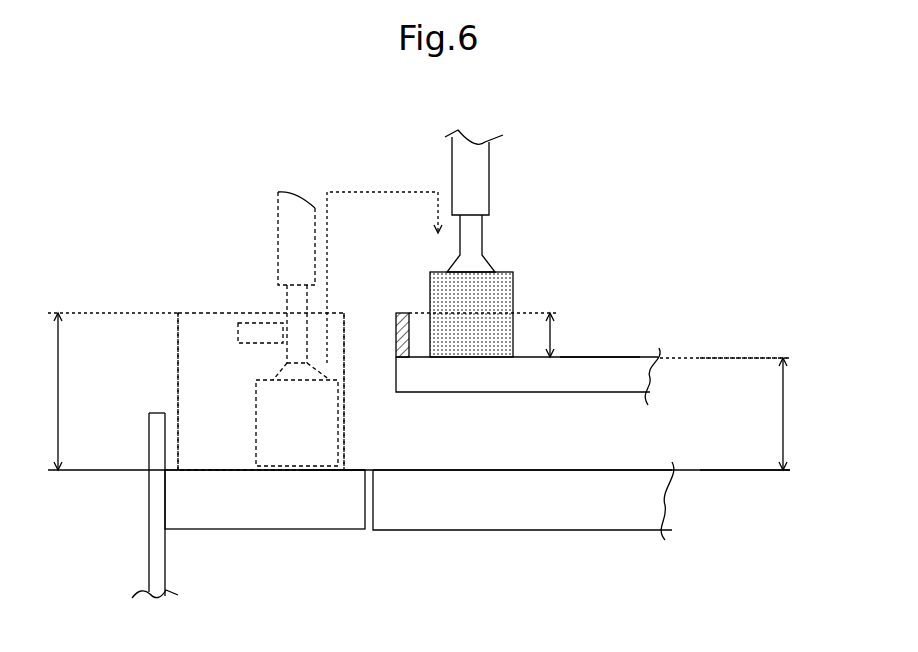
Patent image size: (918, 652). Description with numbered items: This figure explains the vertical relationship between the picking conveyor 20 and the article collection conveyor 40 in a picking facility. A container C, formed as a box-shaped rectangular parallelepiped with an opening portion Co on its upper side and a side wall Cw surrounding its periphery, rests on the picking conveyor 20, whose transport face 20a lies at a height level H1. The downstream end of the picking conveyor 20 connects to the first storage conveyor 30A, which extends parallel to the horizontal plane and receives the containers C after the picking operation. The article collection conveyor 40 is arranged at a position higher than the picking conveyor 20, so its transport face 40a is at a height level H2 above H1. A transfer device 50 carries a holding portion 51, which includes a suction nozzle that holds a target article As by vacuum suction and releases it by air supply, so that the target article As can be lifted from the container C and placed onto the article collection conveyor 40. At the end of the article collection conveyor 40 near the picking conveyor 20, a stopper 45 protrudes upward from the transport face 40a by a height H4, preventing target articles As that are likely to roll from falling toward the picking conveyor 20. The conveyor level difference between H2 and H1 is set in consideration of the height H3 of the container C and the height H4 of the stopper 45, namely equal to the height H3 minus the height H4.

The picking conveyor 20 is at (274, 522).
The transport face of the picking conveyor 20a is at (352, 461).
The first storage conveyor 30A is at (500, 522).
The article collection conveyor 40 is at (566, 393).
The transport face of the article collection conveyor 40a is at (615, 357).
The stopper 45 is at (403, 312).
The target article As is at (512, 279).
The transfer device 50 is at (518, 142).
The holding portion 51 is at (490, 213).
The opening portion Co is at (208, 338).
The side wall Cw is at (182, 380).
The container C is at (345, 372).
The height level of the transport face of the picking conveyor H1 is at (764, 474).
The height level of the transport face of the article collection conveyor H2 is at (764, 361).
The height of the container H3 is at (40, 391).
The height of the stopper H4 is at (503, 335).